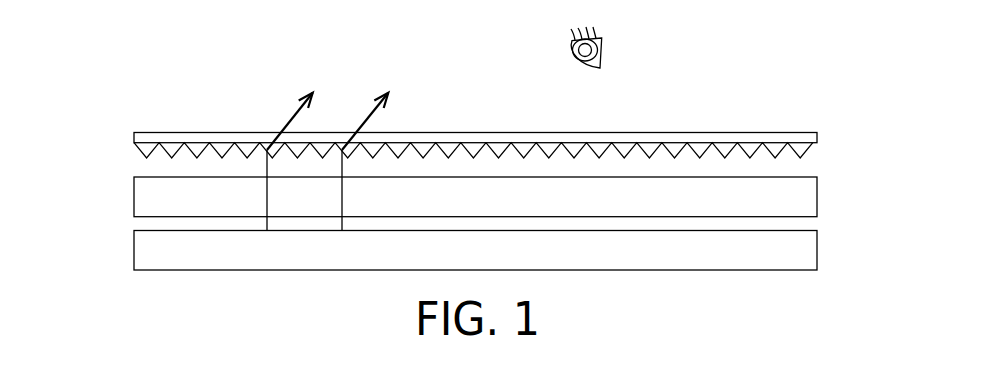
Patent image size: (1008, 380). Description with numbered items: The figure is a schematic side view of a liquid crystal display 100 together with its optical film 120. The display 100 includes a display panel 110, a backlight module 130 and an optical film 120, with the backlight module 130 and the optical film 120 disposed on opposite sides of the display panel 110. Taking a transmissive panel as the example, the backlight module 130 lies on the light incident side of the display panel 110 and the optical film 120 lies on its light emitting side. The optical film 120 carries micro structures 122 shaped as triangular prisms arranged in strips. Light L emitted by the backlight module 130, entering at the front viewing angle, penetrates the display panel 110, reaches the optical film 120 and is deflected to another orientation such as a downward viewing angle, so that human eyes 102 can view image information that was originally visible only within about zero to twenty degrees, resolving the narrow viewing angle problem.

The liquid crystal display 100 is at (98, 64).
The human eyes 102 is at (603, 40).
The display panel 110 is at (817, 196).
The optical film 120 is at (515, 124).
The micro structures 122 is at (748, 147).
The backlight module 130 is at (817, 250).
The light L is at (327, 146).